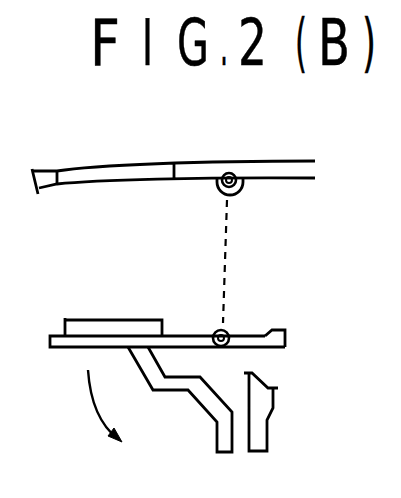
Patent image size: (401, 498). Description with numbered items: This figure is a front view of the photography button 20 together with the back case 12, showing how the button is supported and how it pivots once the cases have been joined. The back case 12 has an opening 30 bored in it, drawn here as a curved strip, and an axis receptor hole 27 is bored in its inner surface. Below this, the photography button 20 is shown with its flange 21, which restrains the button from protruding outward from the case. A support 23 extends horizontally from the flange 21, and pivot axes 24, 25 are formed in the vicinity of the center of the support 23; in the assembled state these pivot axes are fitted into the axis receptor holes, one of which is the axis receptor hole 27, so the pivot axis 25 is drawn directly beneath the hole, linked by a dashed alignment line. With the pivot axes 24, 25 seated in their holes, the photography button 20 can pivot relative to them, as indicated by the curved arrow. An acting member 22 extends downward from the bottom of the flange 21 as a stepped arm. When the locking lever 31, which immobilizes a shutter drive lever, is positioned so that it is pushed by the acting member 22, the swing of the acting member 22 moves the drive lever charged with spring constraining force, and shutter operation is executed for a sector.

The back case 12 is at (47, 170).
The opening 30 is at (115, 166).
The axis receptor hole 27 is at (233, 173).
The photography button 20 is at (100, 320).
The flange 21 is at (50, 347).
The acting member 22 is at (217, 441).
The support 23 is at (267, 348).
The pivot axis 24 is at (228, 331).
The pivot axis 25 is at (285, 305).
The locking lever 31 is at (268, 440).